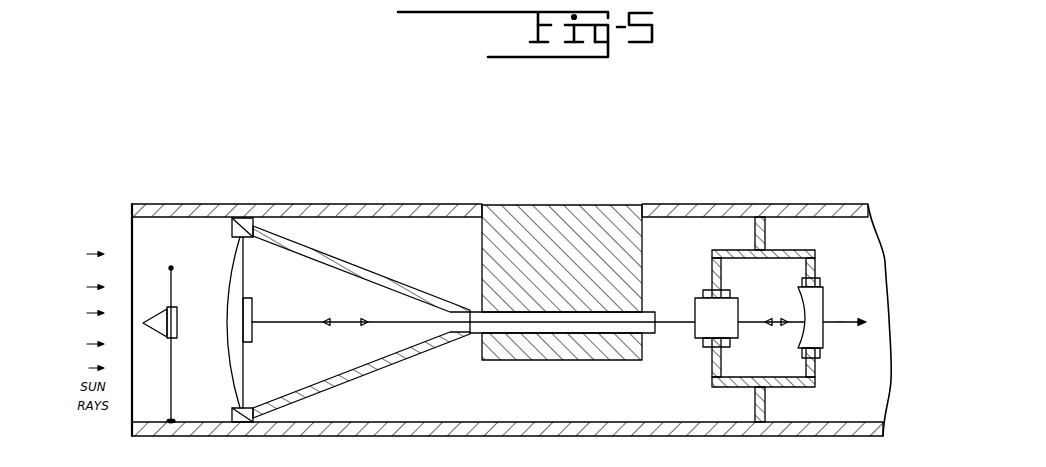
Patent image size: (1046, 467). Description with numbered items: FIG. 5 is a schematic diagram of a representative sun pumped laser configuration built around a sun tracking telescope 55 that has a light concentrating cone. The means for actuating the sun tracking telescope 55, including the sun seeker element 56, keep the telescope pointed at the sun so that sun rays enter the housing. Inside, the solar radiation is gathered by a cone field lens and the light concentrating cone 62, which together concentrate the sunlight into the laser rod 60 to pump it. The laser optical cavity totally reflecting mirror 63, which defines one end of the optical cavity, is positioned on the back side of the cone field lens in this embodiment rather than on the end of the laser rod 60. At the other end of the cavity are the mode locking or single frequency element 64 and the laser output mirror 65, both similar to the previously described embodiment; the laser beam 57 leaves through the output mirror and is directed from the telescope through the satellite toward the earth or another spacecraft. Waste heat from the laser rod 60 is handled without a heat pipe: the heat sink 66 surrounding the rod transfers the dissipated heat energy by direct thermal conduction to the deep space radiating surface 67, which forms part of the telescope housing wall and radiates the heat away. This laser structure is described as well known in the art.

The sun tracking telescope 55 is at (345, 204).
The sun seeker element 56 is at (152, 330).
The laser beam 57 is at (843, 323).
The laser rod 60 is at (652, 335).
The light concentrating cone 62 is at (375, 372).
The laser optical cavity totally reflecting mirror 63 is at (273, 323).
The mode locking or single frequency element 64 is at (697, 330).
The laser output mirror 65 is at (825, 344).
The heat sink 66 is at (548, 360).
The deep space radiating surface 67 is at (608, 205).